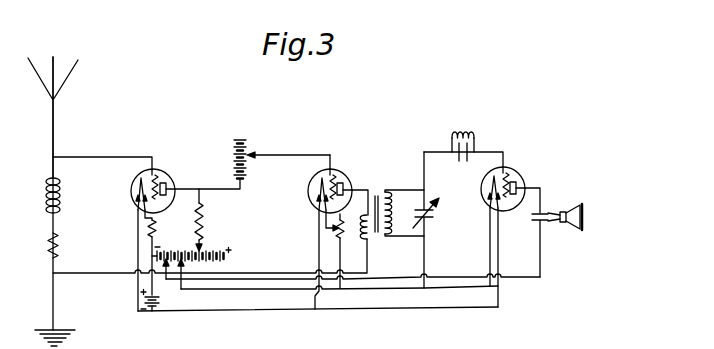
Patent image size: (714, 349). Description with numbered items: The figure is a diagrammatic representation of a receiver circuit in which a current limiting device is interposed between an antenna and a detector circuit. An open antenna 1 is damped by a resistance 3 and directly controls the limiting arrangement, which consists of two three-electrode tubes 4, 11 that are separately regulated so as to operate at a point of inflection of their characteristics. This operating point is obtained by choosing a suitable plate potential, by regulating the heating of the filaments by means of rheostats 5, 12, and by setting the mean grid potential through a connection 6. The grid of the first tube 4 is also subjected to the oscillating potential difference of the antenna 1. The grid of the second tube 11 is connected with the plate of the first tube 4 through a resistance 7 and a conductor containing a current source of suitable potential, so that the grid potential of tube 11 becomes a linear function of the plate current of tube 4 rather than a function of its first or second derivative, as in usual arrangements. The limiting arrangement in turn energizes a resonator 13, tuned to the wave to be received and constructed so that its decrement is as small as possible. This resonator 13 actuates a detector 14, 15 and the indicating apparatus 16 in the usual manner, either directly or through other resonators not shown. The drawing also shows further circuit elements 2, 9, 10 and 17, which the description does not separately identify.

The open antenna 1 is at (53, 117).
The tuning inductance coil 2 is at (61, 195).
The resistance 3 is at (61, 245).
The three-electrode tube 4 is at (153, 185).
The rheostat 5 is at (157, 228).
The connection 6 is at (169, 273).
The resistance 7 is at (204, 220).
The battery tap 9 is at (191, 274).
The plate battery 10 is at (191, 248).
The three-electrode tube 11 is at (338, 185).
The rheostat 12 is at (347, 251).
The resonator 13 is at (392, 206).
The detector 14 is at (472, 141).
The detector 15 is at (511, 187).
The indicating apparatus 16 is at (557, 240).
The filament battery 17 is at (159, 301).